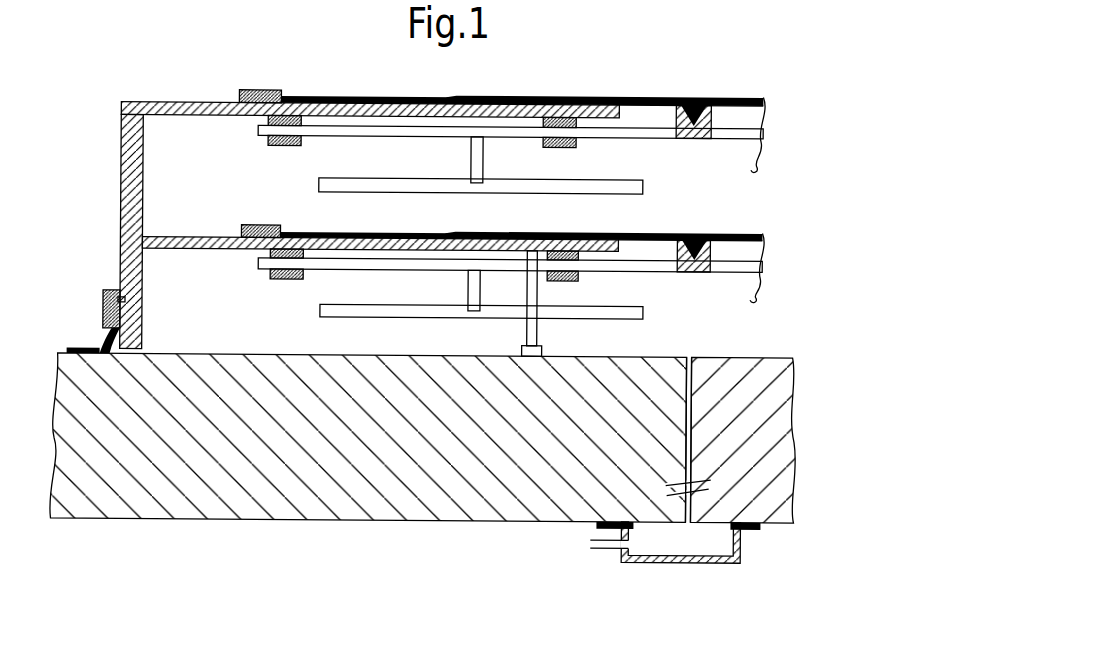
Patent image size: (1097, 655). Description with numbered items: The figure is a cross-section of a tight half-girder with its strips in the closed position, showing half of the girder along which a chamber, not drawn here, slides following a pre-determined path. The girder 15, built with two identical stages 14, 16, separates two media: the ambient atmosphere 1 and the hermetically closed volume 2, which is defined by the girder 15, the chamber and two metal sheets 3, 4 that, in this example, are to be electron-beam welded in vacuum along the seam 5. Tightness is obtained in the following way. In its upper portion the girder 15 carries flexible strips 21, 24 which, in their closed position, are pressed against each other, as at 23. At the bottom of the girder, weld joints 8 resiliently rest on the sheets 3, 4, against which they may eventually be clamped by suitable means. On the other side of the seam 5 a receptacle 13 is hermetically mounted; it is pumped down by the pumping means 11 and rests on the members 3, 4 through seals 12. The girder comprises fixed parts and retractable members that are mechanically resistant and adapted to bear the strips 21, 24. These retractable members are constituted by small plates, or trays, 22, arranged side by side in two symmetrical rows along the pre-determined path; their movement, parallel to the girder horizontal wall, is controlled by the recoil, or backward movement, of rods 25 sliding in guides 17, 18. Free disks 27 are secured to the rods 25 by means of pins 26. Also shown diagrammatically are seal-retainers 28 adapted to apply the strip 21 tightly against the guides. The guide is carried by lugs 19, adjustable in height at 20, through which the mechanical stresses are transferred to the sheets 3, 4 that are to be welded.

The ambient atmosphere 1 is at (162, 70).
The hermetically closed volume 2 is at (199, 138).
The metal sheet 3 is at (669, 418).
The metal sheet 4 is at (708, 415).
The seam 5 is at (690, 360).
The weld joint 8 is at (96, 350).
The pumping means 11 is at (598, 549).
The seal 12 is at (748, 528).
The receptacle 13 is at (687, 561).
The stage 14 is at (139, 103).
The girder 15 is at (125, 162).
The stage 16 is at (160, 240).
The guide 17 is at (288, 146).
The guide 18 is at (545, 146).
The lug 19 is at (527, 333).
The height adjustment 20 is at (540, 352).
The flexible strip 21 is at (352, 99).
The tray 22 is at (521, 97).
The contact point of strips 23 is at (691, 104).
The flexible strip 24 is at (740, 97).
The rod 25 is at (392, 137).
The pin 26 is at (470, 157).
The free disk 27 is at (585, 182).
The seal-retainer 28 is at (256, 91).